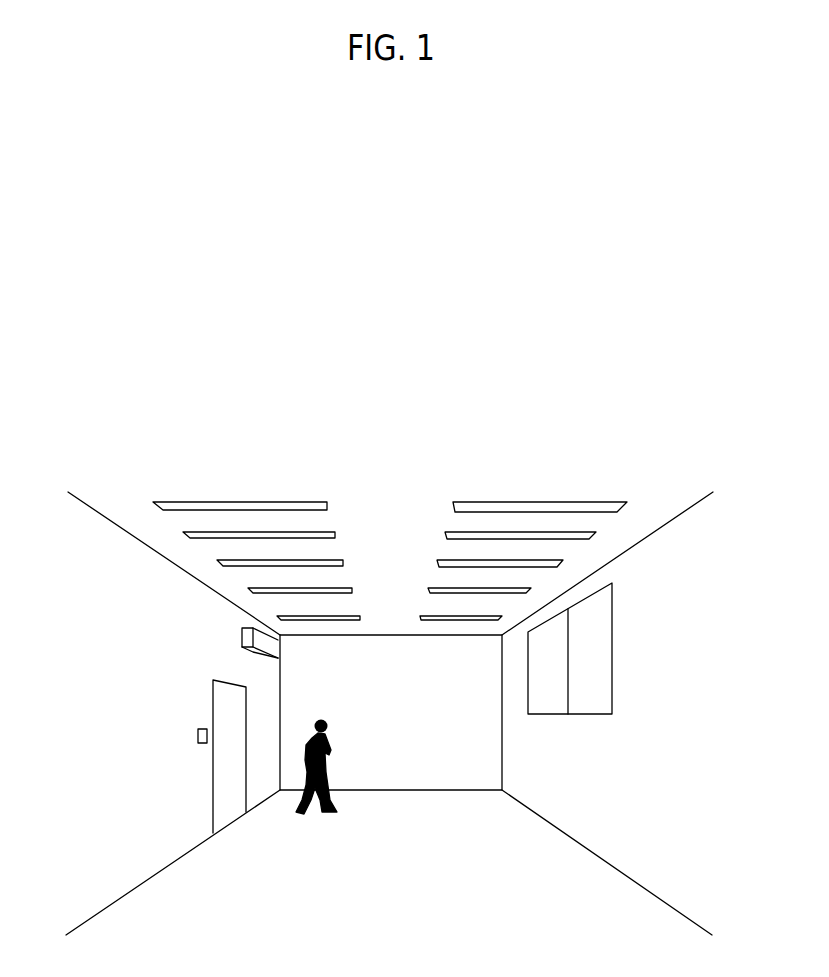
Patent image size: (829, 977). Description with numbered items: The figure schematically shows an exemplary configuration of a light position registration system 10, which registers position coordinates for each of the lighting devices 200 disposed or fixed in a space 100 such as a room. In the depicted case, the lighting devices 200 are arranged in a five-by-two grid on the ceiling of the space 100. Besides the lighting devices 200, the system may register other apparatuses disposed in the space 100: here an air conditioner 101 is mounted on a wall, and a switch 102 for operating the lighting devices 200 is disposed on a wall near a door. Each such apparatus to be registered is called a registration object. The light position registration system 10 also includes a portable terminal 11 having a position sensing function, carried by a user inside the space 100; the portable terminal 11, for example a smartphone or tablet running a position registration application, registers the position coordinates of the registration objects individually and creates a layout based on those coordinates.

The space 100 is at (122, 642).
The air conditioner 101 is at (240, 636).
The switch 102 is at (198, 735).
The light position registration system 10 is at (362, 708).
The portable terminal 11 is at (328, 746).
The lighting devices 200 is at (210, 504).